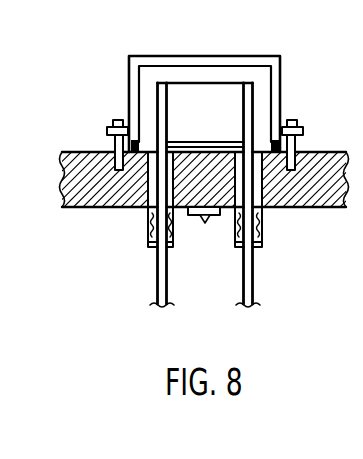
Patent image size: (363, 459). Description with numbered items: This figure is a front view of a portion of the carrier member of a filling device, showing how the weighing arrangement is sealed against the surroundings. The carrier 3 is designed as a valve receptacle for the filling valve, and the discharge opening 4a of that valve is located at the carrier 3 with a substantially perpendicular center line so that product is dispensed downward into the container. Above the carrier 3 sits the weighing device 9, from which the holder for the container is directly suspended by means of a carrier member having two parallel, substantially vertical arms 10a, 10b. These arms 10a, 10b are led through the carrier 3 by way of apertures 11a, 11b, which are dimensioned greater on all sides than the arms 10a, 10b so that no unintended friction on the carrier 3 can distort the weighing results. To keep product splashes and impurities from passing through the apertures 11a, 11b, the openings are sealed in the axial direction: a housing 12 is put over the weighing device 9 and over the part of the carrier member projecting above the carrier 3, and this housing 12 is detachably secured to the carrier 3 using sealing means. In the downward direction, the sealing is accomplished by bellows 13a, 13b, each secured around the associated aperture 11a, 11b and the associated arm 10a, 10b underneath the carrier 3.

The carrier 3 is at (318, 152).
The discharge opening 4a is at (195, 213).
The weighing device 9 is at (213, 122).
The arm 10a is at (160, 287).
The arm 10b is at (257, 289).
The aperture 11a is at (146, 188).
The aperture 11b is at (258, 187).
The housing 12 is at (256, 55).
The bellows 13a is at (148, 234).
The bellows 13b is at (262, 233).